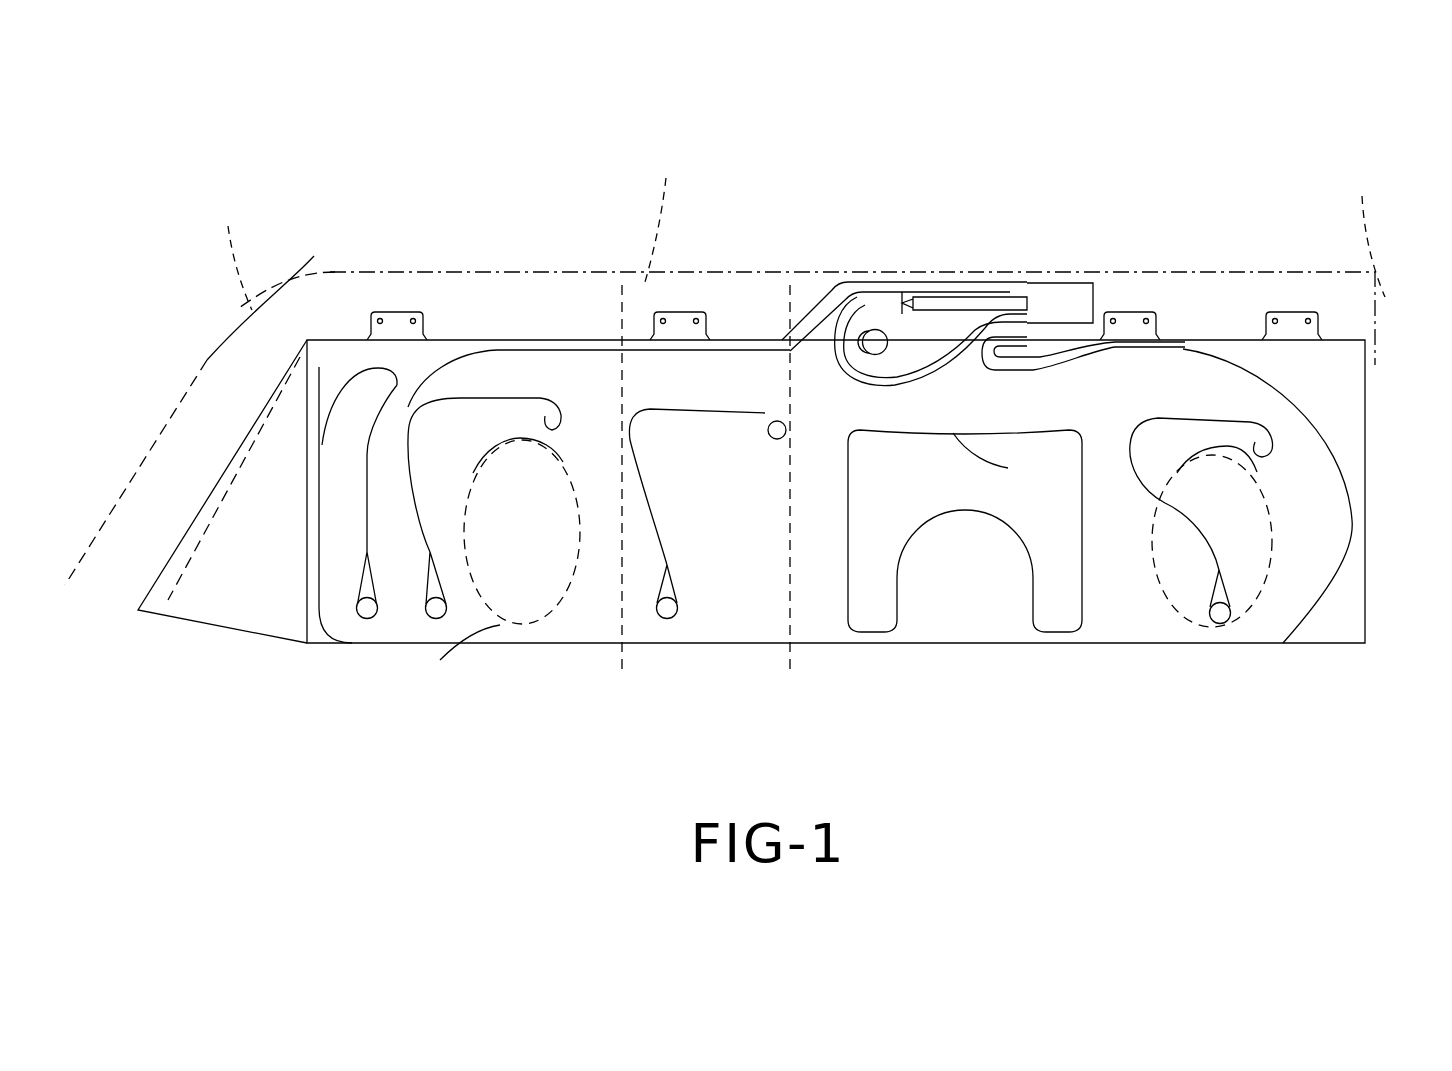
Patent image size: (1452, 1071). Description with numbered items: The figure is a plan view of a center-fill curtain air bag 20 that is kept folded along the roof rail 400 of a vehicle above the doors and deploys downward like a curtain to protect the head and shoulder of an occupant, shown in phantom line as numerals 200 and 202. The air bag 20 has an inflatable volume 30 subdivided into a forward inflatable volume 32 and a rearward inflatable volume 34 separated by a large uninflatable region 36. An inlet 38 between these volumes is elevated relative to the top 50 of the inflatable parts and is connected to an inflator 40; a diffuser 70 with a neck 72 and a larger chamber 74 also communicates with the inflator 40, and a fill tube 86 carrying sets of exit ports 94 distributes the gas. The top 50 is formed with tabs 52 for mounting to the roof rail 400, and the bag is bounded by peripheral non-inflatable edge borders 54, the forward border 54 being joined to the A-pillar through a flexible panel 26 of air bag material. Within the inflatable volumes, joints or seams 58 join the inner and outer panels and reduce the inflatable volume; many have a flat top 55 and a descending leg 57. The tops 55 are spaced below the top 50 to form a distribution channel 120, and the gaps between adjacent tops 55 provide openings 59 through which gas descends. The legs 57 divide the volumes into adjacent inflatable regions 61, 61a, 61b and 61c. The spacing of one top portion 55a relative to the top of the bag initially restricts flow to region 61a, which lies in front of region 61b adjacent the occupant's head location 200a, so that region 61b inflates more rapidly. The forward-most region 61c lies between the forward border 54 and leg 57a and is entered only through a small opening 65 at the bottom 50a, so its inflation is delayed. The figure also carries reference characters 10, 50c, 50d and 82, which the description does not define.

The vehicle 10 is at (420, 164).
The center-fill curtain air bag 20 is at (319, 192).
The flexible panel 26 is at (212, 580).
The inflatable volume 30 is at (567, 350).
The forward inflatable volume 32 is at (520, 363).
The rearward inflatable volume 34 is at (1185, 360).
The uninflatable region 36 is at (893, 500).
The inlet 38 is at (1020, 282).
The air bag inflator 40 is at (1082, 300).
The top of the air bag 50 is at (596, 340).
The bottom of the air bag 50a is at (770, 643).
The front edge of panel 50c is at (310, 408).
The rear edge of panel 50d is at (1337, 422).
The tabs 52 is at (395, 312).
The edge border 54 is at (306, 282).
The top portion of joint or seam 55 is at (693, 411).
The top portion of one joint 55a is at (528, 400).
The descending leg 57 is at (423, 534).
The leg 57a is at (367, 458).
The joints or seams 58 is at (421, 498).
The openings 59 is at (446, 355).
The inflatable region 61 is at (723, 516).
The inflatable region 61a is at (395, 540).
The inflatable region 61b is at (520, 628).
The forward-most inflatable region 61c is at (338, 505).
The small opening 65 is at (368, 630).
The diffuser 70 is at (832, 353).
The neck 72 is at (955, 335).
The chamber 74 is at (866, 300).
The inflator fitting 82 is at (863, 333).
The fill tube 86 is at (998, 296).
The exit ports 94 is at (950, 392).
The distribution channel 120 is at (637, 393).
The occupant head 200 is at (543, 623).
The occupant's head location 200a is at (562, 453).
The occupant shoulder 202 is at (500, 624).
The roof rail 400 is at (748, 272).